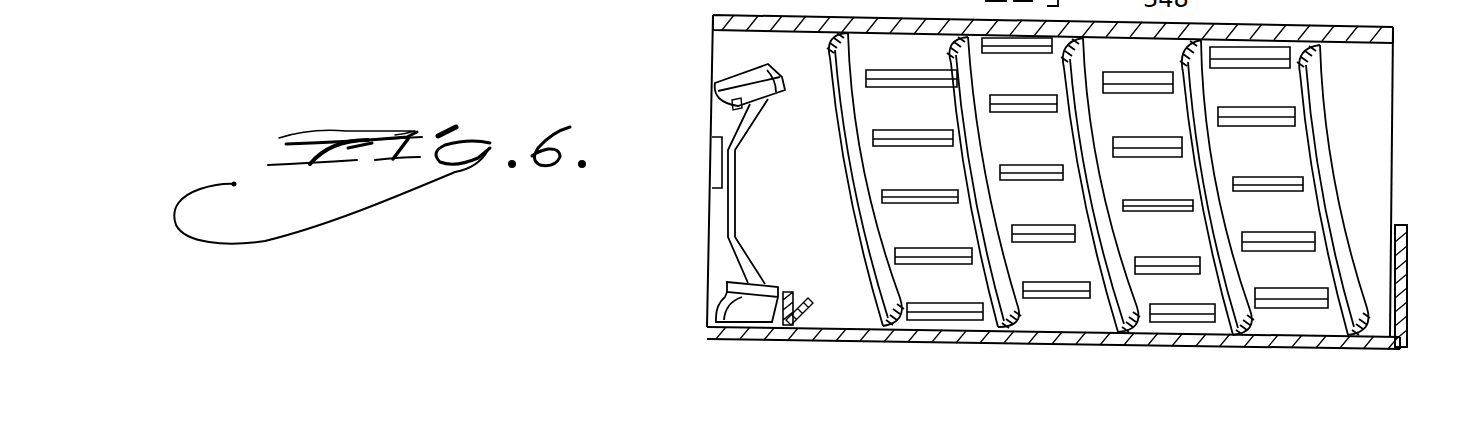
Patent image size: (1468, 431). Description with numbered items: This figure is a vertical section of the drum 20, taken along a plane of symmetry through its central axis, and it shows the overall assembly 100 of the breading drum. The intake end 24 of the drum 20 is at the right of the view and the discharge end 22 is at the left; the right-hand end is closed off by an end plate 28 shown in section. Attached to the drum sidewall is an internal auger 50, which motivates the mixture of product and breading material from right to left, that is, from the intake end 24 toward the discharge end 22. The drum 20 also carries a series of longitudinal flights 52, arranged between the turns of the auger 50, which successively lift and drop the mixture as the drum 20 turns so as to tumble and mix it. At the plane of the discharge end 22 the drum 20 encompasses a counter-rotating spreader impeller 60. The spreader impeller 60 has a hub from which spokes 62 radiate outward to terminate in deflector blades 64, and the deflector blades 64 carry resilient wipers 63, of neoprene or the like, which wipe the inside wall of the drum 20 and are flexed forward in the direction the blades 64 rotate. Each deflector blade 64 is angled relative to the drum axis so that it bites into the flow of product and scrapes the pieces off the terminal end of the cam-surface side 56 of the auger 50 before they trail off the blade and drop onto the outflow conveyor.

The filter assembly 100 is at (590, 95).
The drum 20 is at (1300, 33).
The discharge end 22 is at (707, 237).
The intake end 24 is at (1394, 86).
The end plate 28 is at (1408, 278).
The internal auger 50 is at (982, 160).
The longitudinal flights 52 is at (910, 198).
The cam-surface side 56 is at (790, 292).
The spreader impeller 60 is at (784, 191).
The spokes 62 is at (745, 208).
The resilient wipers 63 is at (767, 70).
The deflector blades 64 is at (775, 90).